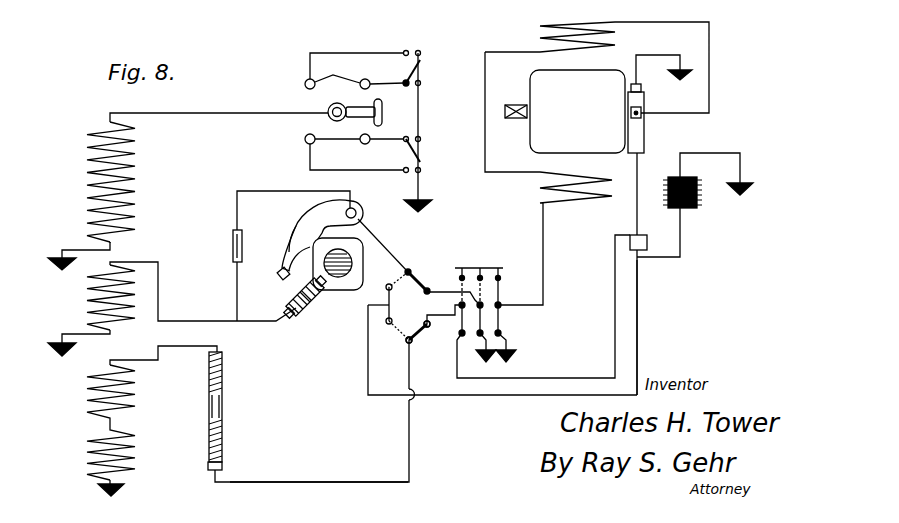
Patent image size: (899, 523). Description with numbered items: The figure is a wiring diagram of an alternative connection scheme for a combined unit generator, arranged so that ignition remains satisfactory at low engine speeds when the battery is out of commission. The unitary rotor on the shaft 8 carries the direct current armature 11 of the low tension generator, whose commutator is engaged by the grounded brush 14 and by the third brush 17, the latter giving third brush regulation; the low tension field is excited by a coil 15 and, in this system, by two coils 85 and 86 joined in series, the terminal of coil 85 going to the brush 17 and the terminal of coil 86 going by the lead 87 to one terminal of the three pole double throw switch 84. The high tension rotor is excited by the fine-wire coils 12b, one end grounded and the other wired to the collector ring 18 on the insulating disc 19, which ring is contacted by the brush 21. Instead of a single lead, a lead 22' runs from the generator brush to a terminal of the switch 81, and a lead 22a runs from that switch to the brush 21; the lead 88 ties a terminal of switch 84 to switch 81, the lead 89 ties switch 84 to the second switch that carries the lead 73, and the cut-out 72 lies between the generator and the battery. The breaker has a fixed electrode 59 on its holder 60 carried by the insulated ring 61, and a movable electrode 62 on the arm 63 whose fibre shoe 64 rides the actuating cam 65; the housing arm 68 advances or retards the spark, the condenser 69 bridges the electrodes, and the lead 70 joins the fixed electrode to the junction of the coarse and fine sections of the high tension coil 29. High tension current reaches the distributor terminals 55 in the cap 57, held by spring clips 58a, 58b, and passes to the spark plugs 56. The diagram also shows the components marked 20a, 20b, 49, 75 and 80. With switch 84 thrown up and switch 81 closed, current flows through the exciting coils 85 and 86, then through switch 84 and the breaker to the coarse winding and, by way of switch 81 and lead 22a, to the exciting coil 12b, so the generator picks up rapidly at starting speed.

The shaft 8 is at (516, 119).
The direct current armature 11 is at (577, 111).
The exciting winding coils 12b is at (90, 409).
The grounded brush 14 is at (642, 87).
The low tension exciting coil 15 is at (645, 148).
The third brush 17 is at (642, 110).
The collector ring 18 is at (224, 360).
The insulating disc 19 is at (224, 386).
The coil section 20a is at (88, 304).
The coil section 20b is at (88, 200).
The collector ring brush 21 is at (223, 467).
The lead 22a is at (288, 481).
The lead 22' is at (648, 327).
The high tension generating coil 29 is at (133, 243).
The switch handle 49 is at (383, 112).
The high tension terminals 55 is at (337, 106).
The spark plugs 56 is at (419, 67).
The distributor cap 57 is at (239, 113).
The spring clip 58a is at (372, 170).
The spring clip 58b is at (378, 54).
The fixed electrode 59 is at (294, 298).
The holder 60 is at (308, 310).
The ring 61 is at (426, 391).
The movable electrode 62 is at (280, 280).
The breaker arm 63 is at (293, 240).
The fibre shoe 64 is at (310, 224).
The actuating cam 65 is at (365, 263).
The adjusting arm 68 is at (423, 274).
The condenser 69 is at (232, 246).
The lead 70 is at (226, 321).
The cut-out mechanism 72 is at (648, 244).
The lead 73 is at (695, 205).
The link 75 is at (394, 252).
The contact 80 is at (427, 324).
The switch 81 is at (409, 340).
The three pole double throw switch 84 is at (500, 310).
The exciting coil 85 is at (562, 28).
The exciting coil 86 is at (596, 204).
The lead 87 is at (544, 272).
The lead 88 is at (615, 322).
The lead 89 is at (433, 296).